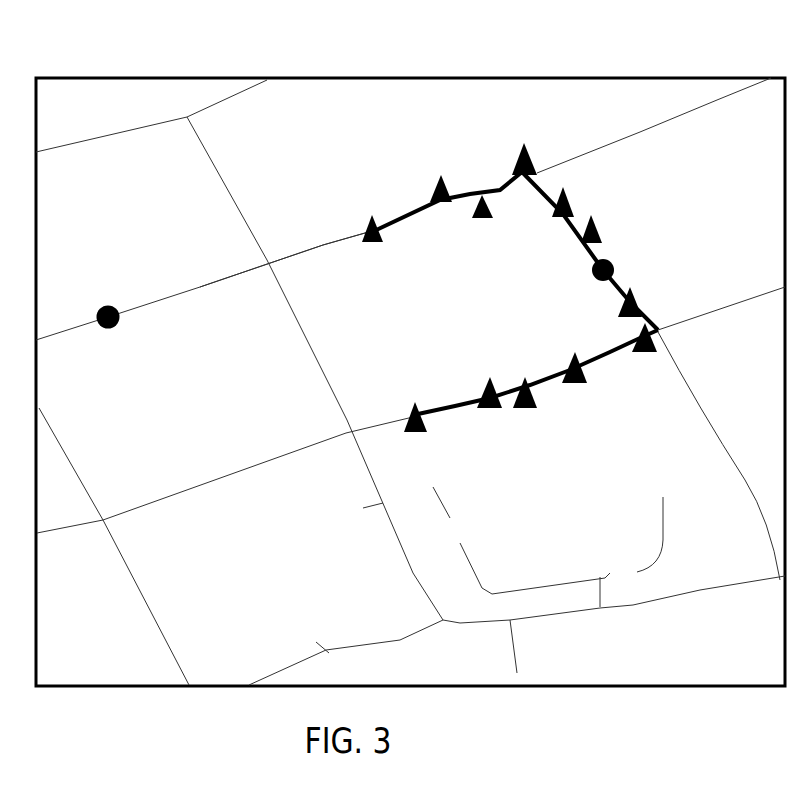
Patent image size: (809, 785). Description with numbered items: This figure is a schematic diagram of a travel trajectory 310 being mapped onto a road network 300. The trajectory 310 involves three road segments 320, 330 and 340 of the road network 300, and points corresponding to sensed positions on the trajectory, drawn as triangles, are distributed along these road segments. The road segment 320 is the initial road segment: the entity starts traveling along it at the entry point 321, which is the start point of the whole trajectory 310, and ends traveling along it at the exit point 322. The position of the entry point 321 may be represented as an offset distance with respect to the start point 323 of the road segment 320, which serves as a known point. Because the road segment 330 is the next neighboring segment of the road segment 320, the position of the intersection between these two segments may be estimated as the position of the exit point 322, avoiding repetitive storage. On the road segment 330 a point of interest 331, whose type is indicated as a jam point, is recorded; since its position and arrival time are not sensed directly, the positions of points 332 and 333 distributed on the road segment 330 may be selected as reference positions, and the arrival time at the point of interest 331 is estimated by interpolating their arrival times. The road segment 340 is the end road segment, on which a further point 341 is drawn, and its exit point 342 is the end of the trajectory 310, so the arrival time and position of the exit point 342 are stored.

The road network 300 is at (229, 47).
The trajectory 310 is at (433, 151).
The road segment 320 is at (323, 245).
The entry point 321 is at (378, 243).
The exit point 322 is at (530, 160).
The start point 323 is at (113, 328).
The road segment 330 is at (547, 199).
The point of interest 331 is at (593, 275).
The point 332 is at (603, 232).
The point 333 is at (643, 299).
The road segment 340 is at (457, 413).
The waypoint marker 341 is at (642, 354).
The exit point 342 is at (413, 434).